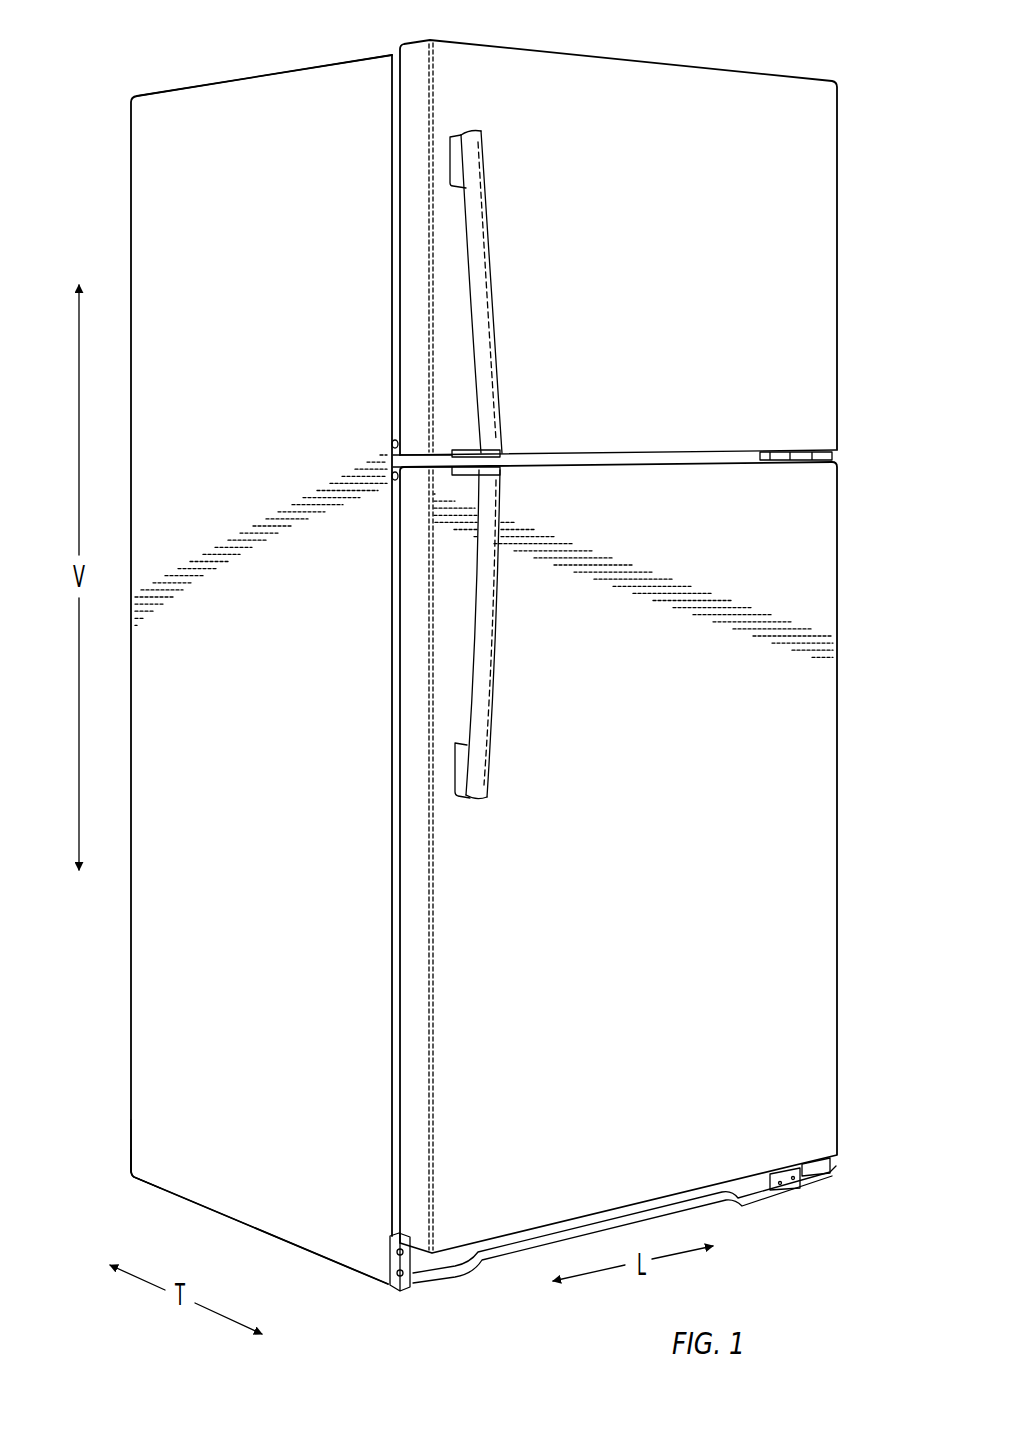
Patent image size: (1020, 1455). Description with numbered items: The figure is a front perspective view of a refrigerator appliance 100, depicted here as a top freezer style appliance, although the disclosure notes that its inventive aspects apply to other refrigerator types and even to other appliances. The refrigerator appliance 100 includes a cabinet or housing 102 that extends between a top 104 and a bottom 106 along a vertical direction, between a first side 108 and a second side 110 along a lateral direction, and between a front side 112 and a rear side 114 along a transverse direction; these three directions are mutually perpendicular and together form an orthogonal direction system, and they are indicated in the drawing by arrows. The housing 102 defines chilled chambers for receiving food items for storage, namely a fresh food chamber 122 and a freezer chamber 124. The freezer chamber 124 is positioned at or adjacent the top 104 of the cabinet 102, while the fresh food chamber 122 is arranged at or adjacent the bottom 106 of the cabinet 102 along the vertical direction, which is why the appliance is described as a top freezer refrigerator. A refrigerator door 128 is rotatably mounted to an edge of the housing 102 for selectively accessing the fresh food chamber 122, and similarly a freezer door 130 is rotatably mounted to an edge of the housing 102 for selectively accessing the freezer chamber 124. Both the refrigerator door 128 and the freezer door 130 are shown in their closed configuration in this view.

The refrigerator appliance 100 is at (195, 55).
The cabinet or housing 102 is at (165, 952).
The top 104 is at (112, 110).
The bottom 106 is at (113, 1162).
The first side 108 is at (415, 1292).
The second side 110 is at (840, 1188).
The front side 112 is at (372, 1296).
The rear side 114 is at (120, 1178).
The fresh food chamber 122 is at (750, 812).
The freezer chamber 124 is at (750, 318).
The refrigerator door 128 is at (806, 535).
The freezer door 130 is at (808, 182).